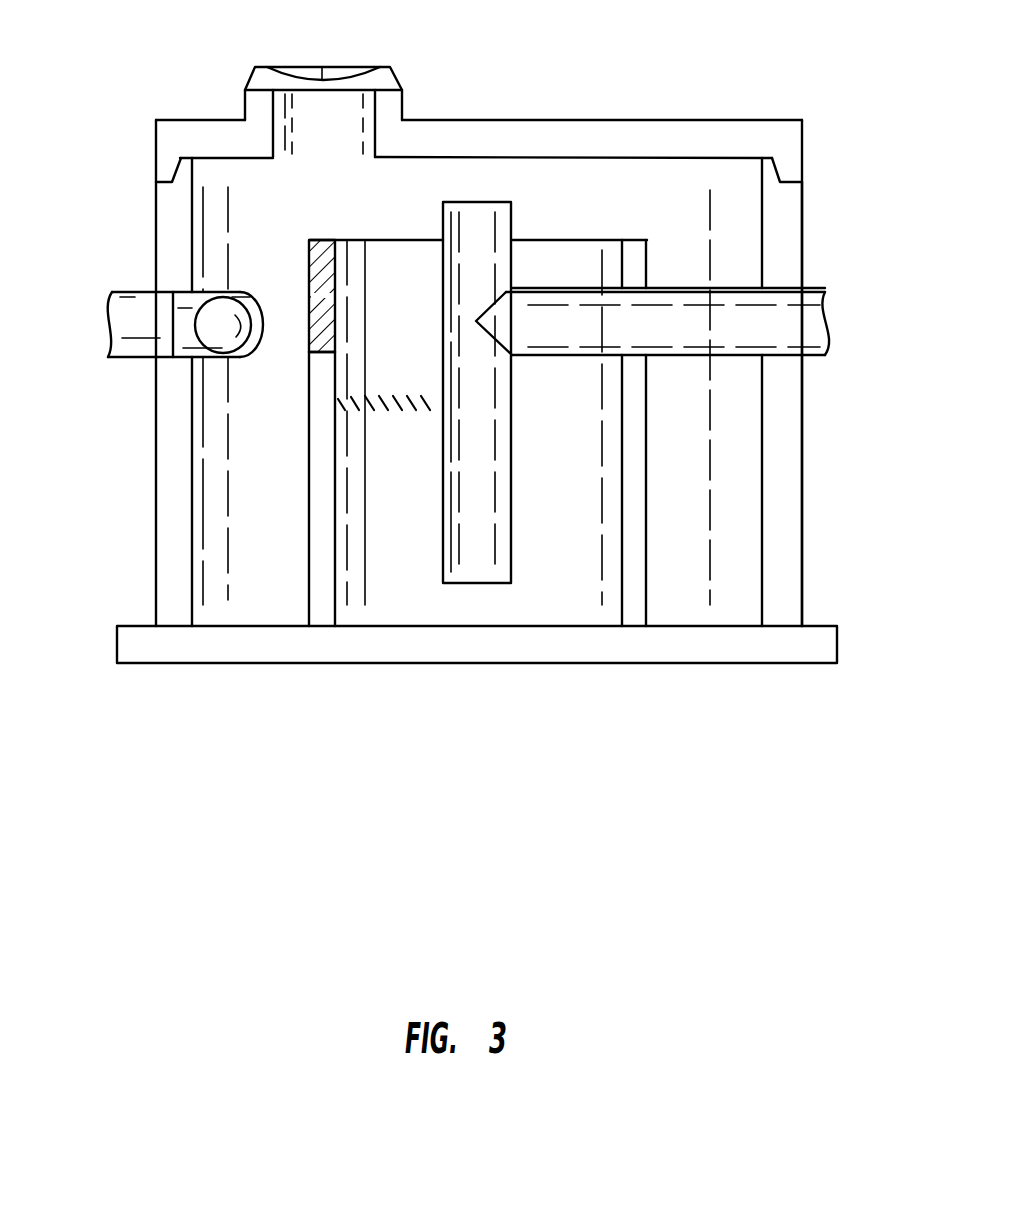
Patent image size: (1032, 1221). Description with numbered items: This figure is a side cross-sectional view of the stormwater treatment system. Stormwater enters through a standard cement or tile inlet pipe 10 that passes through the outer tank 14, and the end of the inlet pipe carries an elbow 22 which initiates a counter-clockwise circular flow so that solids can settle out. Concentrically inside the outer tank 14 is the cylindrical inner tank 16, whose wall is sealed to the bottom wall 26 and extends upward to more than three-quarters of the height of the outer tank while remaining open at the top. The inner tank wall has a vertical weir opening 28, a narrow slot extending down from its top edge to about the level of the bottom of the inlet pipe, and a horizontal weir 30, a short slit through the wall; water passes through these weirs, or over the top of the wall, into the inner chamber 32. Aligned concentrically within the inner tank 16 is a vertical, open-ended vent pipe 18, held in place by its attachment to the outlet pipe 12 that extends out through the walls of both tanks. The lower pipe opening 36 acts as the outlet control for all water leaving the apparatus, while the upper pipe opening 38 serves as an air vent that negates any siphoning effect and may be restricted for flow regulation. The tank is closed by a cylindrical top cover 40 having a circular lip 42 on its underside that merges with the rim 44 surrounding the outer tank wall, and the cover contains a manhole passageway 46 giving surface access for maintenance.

The inlet pipe 10 is at (128, 292).
The outlet pipe 12 is at (745, 302).
The outer tank 14 is at (787, 557).
The inner tank 16 is at (303, 585).
The vent pipe 18 is at (490, 478).
The elbow 22 is at (237, 292).
The bottom wall 26 is at (235, 625).
The vertical weir opening 28 is at (315, 352).
The horizontal weir 30 is at (365, 398).
The inner chamber 32 is at (378, 235).
The lower pipe opening 36 is at (478, 583).
The upper pipe opening 38 is at (483, 227).
The top cover 40 is at (712, 128).
The circular lip 42 is at (800, 165).
The rim 44 is at (188, 173).
The manhole passageway 46 is at (332, 67).